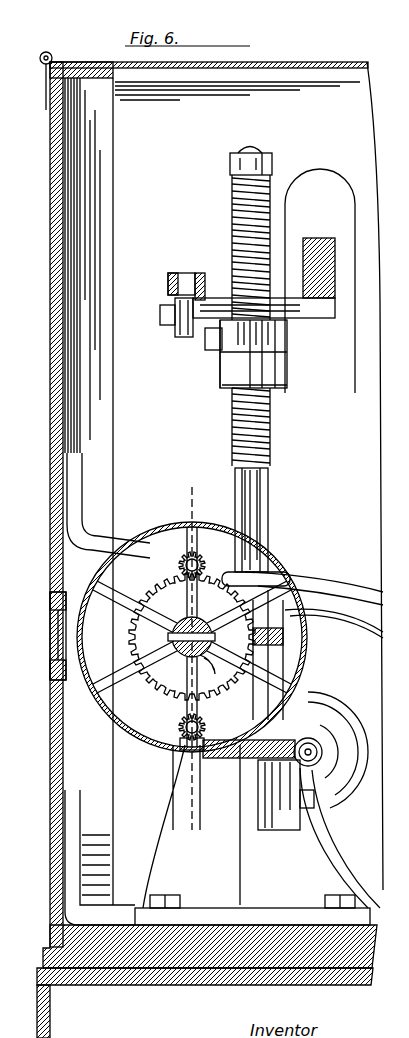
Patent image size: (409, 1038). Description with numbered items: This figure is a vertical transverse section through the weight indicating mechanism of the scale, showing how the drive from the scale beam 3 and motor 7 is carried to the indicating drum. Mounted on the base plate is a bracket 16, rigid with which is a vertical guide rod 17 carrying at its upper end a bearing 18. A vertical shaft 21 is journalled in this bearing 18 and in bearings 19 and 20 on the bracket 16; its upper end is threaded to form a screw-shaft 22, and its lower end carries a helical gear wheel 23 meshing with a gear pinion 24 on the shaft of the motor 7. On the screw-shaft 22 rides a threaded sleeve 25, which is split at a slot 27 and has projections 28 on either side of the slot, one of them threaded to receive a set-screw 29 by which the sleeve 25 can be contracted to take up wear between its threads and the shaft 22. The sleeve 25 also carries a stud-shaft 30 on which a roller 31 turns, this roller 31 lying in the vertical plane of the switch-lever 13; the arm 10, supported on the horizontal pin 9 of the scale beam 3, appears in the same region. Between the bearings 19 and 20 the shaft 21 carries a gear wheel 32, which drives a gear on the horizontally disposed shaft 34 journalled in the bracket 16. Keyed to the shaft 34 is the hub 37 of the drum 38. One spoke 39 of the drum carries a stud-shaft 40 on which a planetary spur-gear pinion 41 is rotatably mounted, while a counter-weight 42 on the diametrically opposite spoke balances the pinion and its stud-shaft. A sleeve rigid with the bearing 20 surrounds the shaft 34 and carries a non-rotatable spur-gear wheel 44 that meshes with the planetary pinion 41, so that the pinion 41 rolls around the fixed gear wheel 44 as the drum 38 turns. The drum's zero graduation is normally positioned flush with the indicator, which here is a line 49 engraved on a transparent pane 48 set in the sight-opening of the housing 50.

The scale beam 3 is at (333, 240).
The motor 7 is at (388, 688).
The horizontal pin 9 is at (300, 318).
The arm 10 is at (202, 272).
The switch-lever 13 is at (178, 284).
The bracket 16 is at (195, 872).
The vertical guide rod 17 is at (268, 500).
The bearing 18 is at (272, 153).
The bearing 19 is at (275, 574).
The bearing 20 is at (275, 700).
The vertical shaft 21 is at (250, 515).
The screw-shaft 22 is at (270, 420).
The gear wheel 23 is at (240, 760).
The gear pinion 24 is at (316, 744).
The threaded sleeve 25 is at (217, 385).
The slot 27 is at (285, 378).
The projections 28 is at (240, 352).
The set-screw 29 is at (207, 350).
The stud-shaft 30 is at (160, 315).
The roller 31 is at (178, 335).
The gear wheel 32 is at (283, 635).
The horizontal shaft 34 is at (172, 682).
The hub 37 is at (183, 628).
The drum 38 is at (170, 530).
The spoke 39 is at (188, 548).
The stud-shaft 40 is at (200, 558).
The planetary spur-gear pinion 41 is at (204, 566).
The counter-weight 42 is at (185, 748).
The spur-gear wheel 44 is at (132, 648).
The transparent pane 48 is at (56, 624).
The line 49 is at (58, 640).
The housing 50 is at (55, 690).